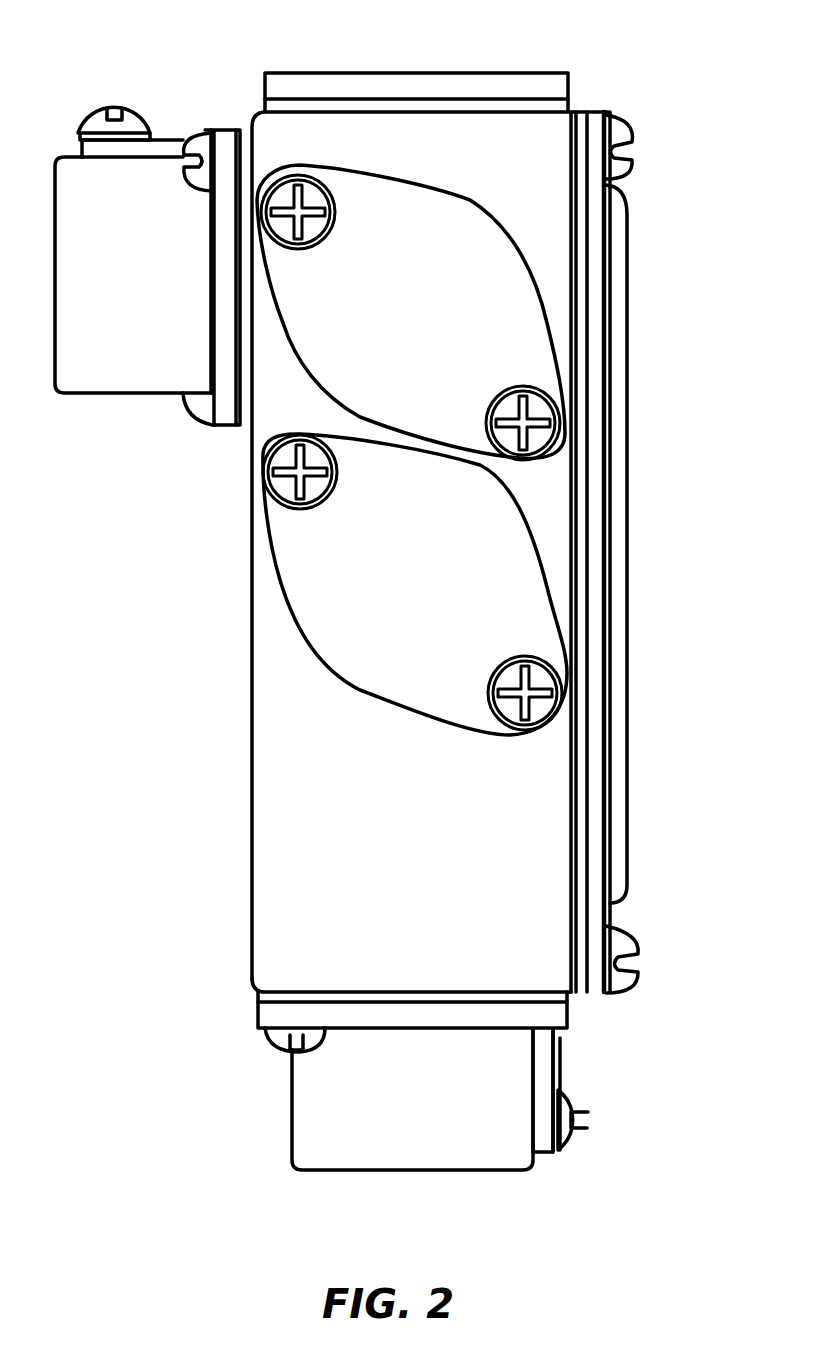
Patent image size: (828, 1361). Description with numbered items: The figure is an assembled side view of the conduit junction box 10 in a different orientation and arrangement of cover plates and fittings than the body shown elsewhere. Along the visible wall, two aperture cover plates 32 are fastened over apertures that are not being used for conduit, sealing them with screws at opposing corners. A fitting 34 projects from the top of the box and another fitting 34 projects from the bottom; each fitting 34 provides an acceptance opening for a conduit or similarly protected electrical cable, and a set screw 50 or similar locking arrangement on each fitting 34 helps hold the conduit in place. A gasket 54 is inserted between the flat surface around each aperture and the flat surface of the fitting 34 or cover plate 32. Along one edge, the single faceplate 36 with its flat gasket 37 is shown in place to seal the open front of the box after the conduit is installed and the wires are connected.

The conduit junction box 10 is at (226, 978).
The aperture cover plate 32 is at (547, 72).
The fitting 34 is at (182, 311).
The faceplate 36 is at (628, 680).
The flat gasket 37 is at (575, 1000).
The set screw 50 is at (148, 106).
The gasket 54 is at (568, 107).